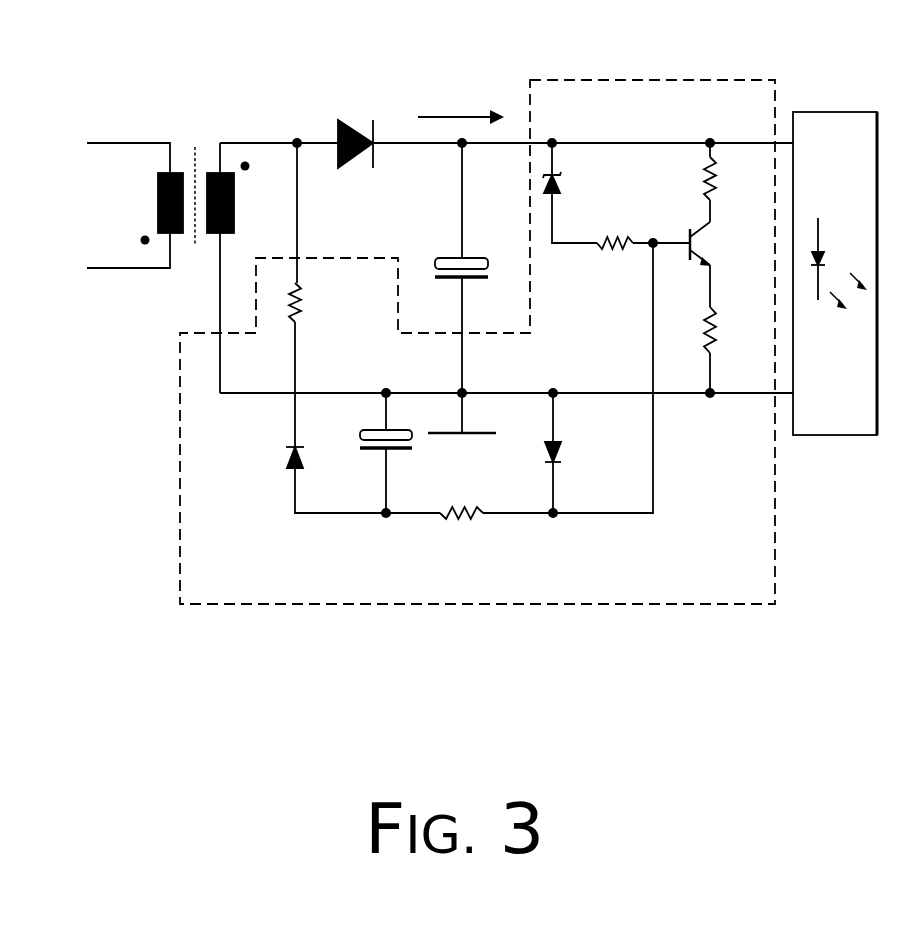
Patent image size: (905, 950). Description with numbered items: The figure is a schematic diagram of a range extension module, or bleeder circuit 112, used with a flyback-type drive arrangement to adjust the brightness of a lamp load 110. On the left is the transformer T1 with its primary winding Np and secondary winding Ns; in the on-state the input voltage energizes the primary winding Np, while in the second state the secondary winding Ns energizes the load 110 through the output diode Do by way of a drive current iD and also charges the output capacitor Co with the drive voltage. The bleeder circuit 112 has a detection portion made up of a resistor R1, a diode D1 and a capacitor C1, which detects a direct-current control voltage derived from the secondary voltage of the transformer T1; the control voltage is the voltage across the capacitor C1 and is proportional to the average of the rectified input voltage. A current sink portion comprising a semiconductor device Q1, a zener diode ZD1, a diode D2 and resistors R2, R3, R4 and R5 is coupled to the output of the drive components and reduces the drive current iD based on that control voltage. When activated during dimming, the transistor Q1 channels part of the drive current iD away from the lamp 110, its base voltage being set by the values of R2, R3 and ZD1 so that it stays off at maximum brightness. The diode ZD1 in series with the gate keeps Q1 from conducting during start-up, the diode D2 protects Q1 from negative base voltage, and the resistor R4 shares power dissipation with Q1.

The range extension module 112 is at (762, 80).
The load 110 is at (858, 414).
The transformer T1 is at (182, 246).
The primary winding Np is at (114, 202).
The secondary winding Ns is at (262, 202).
The output diode Do is at (357, 160).
The drive current iD is at (461, 99).
The output capacitor Co is at (469, 288).
The resistor R1 is at (323, 295).
The diode D1 is at (312, 480).
The capacitor C1 is at (403, 455).
The resistor R2 is at (469, 538).
The diode D2 is at (599, 380).
The diode ZD1 is at (586, 193).
The resistor R3 is at (640, 261).
The resistor R4 is at (734, 182).
The semiconductor device Q1 is at (728, 244).
The resistor R5 is at (734, 329).